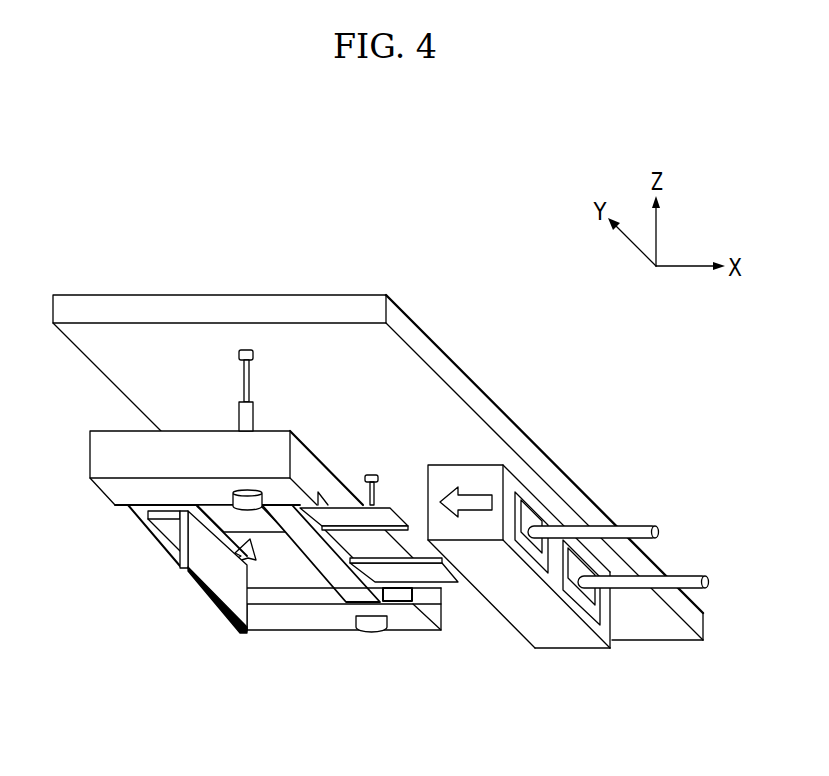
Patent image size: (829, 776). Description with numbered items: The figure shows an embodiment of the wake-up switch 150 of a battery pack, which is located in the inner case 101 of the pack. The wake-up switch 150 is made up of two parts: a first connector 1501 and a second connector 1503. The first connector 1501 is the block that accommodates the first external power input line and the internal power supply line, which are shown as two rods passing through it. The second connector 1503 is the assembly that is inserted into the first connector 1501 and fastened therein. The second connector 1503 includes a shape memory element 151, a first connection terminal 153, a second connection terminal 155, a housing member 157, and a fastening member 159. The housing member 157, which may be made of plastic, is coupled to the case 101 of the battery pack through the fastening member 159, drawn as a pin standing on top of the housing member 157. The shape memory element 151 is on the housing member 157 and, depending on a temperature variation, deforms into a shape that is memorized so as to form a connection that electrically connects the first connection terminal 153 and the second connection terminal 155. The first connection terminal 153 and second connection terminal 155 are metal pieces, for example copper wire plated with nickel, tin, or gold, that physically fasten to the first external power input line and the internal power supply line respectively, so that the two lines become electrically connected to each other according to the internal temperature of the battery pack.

The inner case 101 is at (217, 295).
The wake-up switch 150 is at (410, 206).
The shape memory element 151 is at (200, 590).
The first connection terminal 153 is at (381, 520).
The second connection terminal 155 is at (427, 575).
The housing member 157 is at (122, 492).
The fastening member 159 is at (254, 412).
The first connector 1501 is at (585, 664).
The second connector 1503 is at (279, 646).